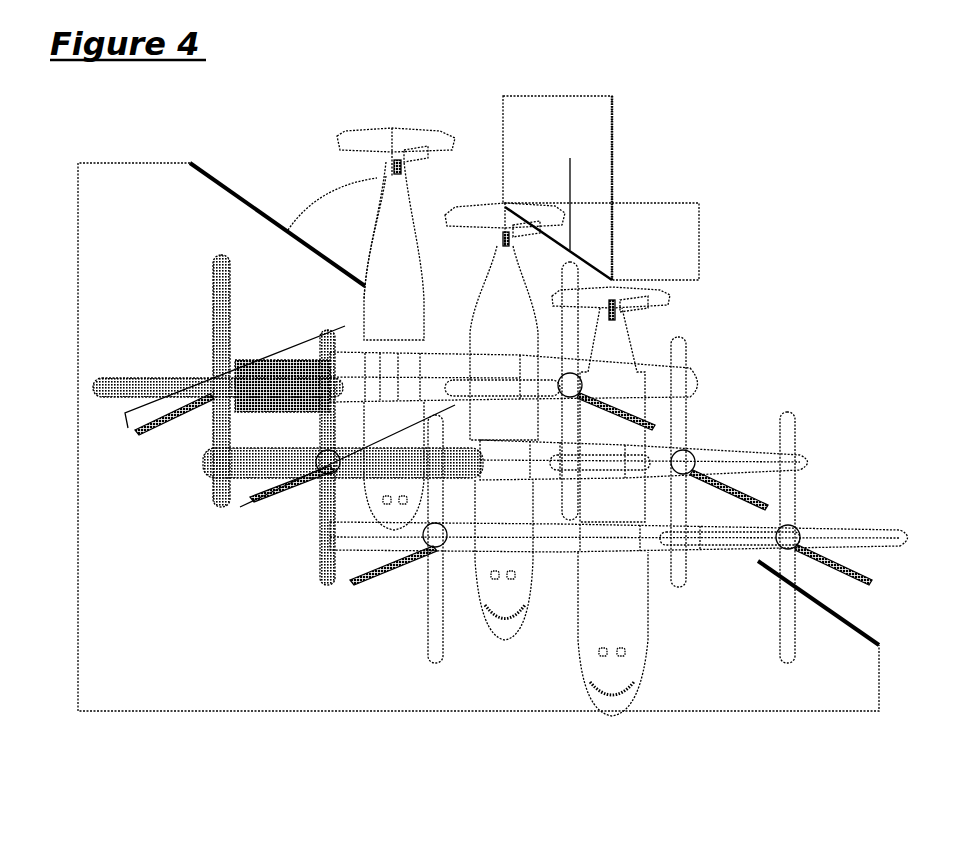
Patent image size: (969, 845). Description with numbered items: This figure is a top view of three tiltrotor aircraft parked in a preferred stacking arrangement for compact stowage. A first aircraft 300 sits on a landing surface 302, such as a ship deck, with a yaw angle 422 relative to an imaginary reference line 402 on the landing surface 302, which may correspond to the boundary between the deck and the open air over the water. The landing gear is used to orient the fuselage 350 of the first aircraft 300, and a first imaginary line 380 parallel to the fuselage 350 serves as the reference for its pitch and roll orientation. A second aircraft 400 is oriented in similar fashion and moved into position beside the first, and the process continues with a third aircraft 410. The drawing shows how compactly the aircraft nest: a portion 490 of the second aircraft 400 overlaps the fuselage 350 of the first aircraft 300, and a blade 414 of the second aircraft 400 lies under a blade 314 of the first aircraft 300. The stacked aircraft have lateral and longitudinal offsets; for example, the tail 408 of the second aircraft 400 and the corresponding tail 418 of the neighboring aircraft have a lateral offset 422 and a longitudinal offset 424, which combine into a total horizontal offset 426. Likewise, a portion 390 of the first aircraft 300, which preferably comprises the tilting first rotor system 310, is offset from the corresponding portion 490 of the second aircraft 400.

The first aircraft 300 is at (332, 126).
The landing surface 302 is at (110, 160).
The first rotor system 310 is at (192, 418).
The blade 314 is at (318, 385).
The fuselage 350 is at (363, 293).
The first imaginary line 380 is at (391, 185).
The portion of the first aircraft 390 is at (135, 403).
The second aircraft 400 is at (482, 142).
The imaginary reference line 402 is at (228, 188).
The tail 408 is at (467, 215).
The third aircraft 410 is at (658, 640).
The blade 414 is at (322, 430).
The tail 418 is at (653, 305).
The lateral offset 422 is at (548, 97).
The longitudinal offset 424 is at (702, 238).
The total horizontal offset 426 is at (568, 320).
The portion of the second aircraft 490 is at (240, 500).